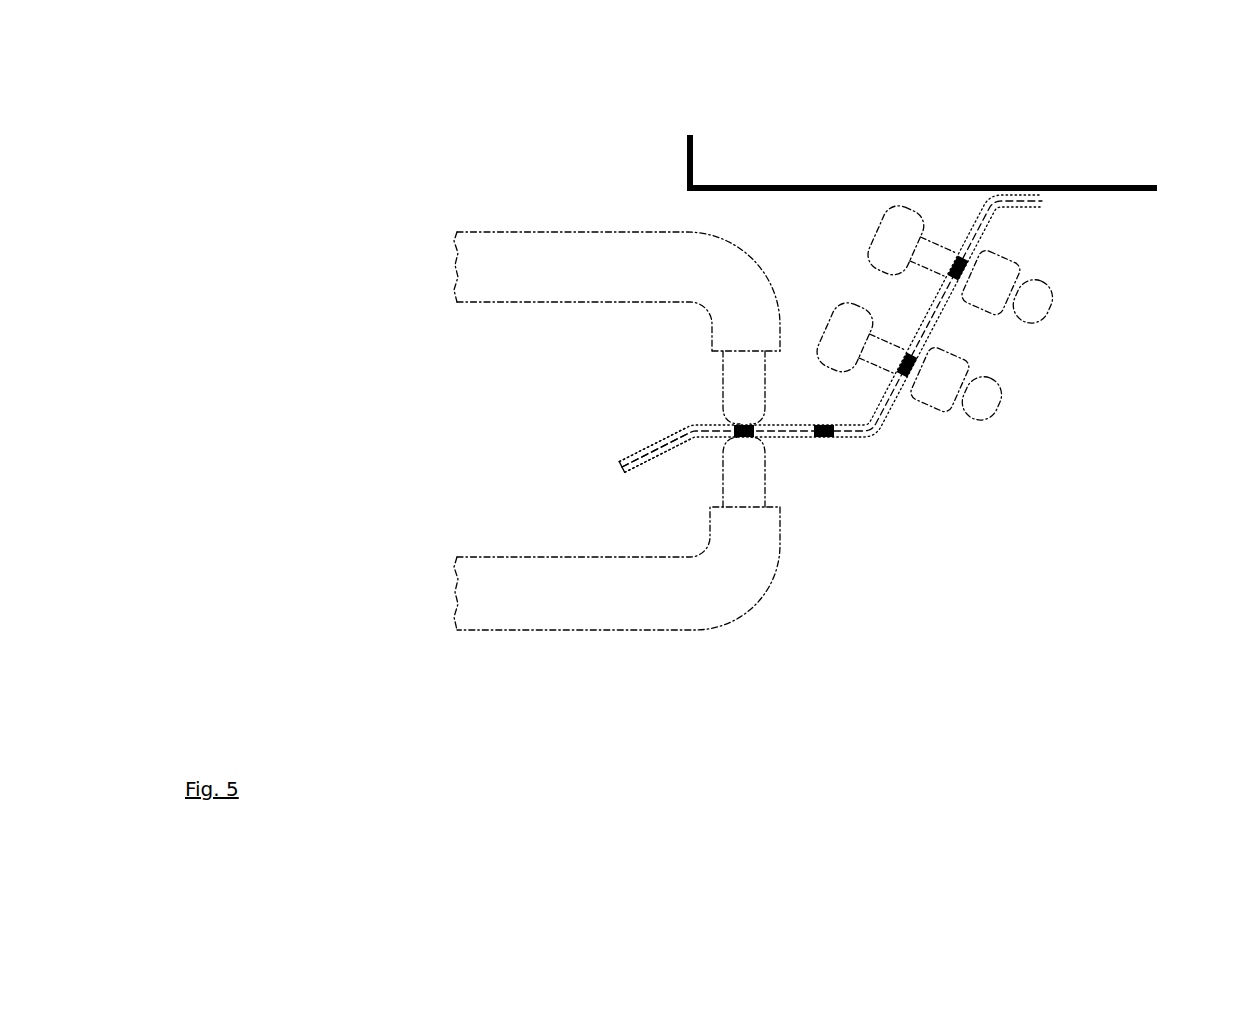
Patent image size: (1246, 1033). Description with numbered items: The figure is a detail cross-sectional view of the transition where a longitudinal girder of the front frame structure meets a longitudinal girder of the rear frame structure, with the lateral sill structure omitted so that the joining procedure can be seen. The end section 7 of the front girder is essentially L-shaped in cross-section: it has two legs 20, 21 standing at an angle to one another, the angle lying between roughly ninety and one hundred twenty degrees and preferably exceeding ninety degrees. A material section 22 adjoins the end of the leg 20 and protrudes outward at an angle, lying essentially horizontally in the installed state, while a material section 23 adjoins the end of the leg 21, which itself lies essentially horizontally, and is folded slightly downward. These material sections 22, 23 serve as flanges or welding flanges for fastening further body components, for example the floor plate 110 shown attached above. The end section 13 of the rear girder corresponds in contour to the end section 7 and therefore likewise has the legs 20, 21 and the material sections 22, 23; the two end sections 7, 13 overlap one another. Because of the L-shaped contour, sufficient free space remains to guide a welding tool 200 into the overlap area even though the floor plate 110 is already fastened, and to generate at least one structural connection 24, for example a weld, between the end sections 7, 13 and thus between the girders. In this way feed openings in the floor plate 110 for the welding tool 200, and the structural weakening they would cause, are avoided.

The floor plate 110 is at (778, 186).
The welding tool 200 is at (883, 235).
The end section 7 is at (861, 438).
The end section 13 is at (668, 431).
The leg 20 is at (940, 308).
The leg 21 is at (750, 435).
The material section 22 is at (1040, 200).
The material section 23 is at (633, 456).
The structural connection 24 is at (910, 363).